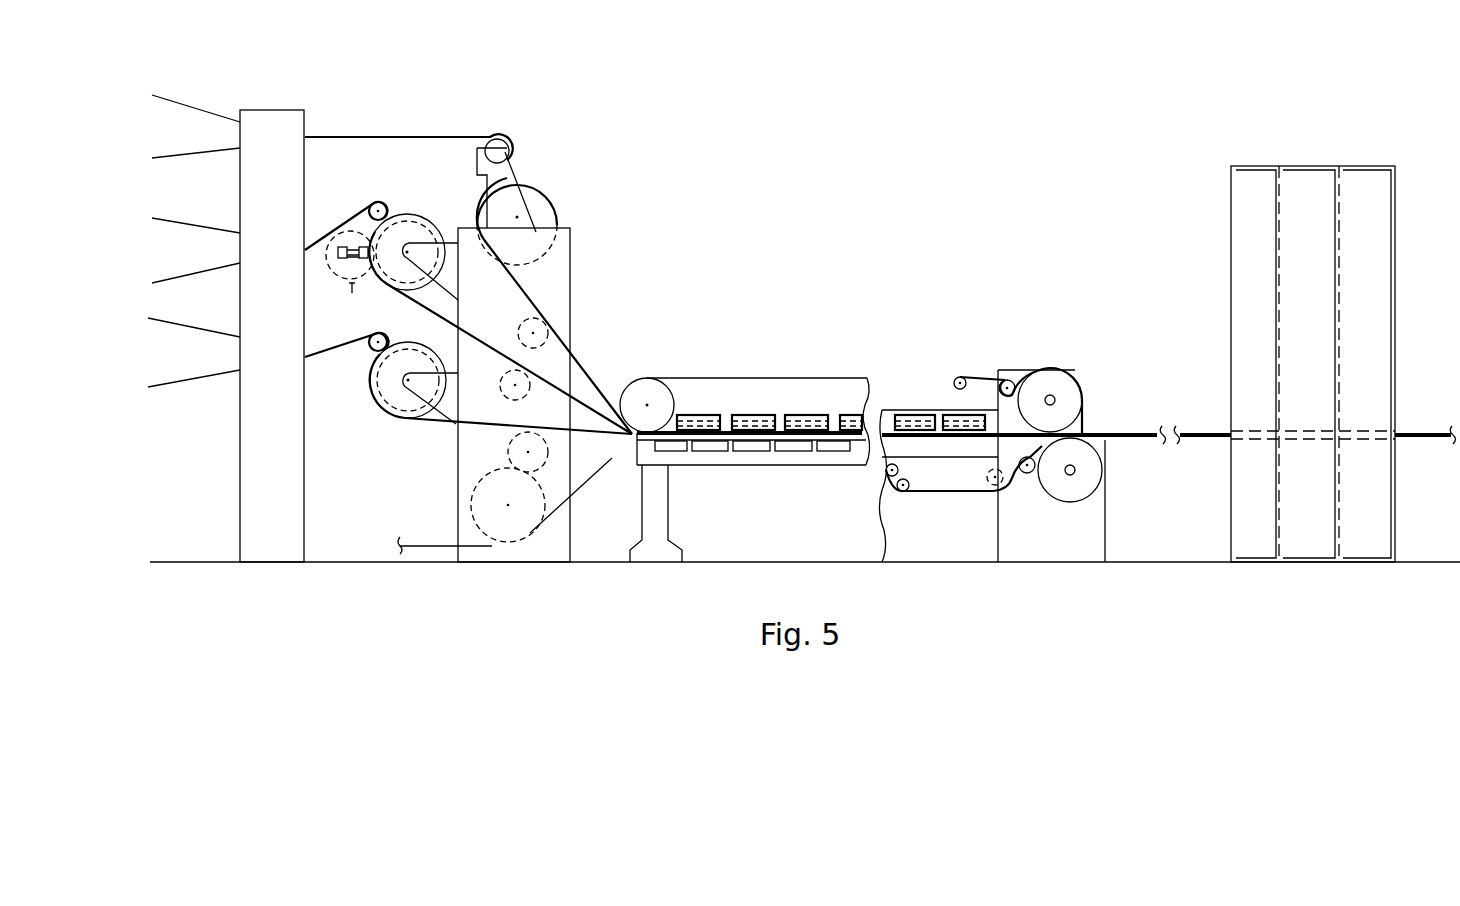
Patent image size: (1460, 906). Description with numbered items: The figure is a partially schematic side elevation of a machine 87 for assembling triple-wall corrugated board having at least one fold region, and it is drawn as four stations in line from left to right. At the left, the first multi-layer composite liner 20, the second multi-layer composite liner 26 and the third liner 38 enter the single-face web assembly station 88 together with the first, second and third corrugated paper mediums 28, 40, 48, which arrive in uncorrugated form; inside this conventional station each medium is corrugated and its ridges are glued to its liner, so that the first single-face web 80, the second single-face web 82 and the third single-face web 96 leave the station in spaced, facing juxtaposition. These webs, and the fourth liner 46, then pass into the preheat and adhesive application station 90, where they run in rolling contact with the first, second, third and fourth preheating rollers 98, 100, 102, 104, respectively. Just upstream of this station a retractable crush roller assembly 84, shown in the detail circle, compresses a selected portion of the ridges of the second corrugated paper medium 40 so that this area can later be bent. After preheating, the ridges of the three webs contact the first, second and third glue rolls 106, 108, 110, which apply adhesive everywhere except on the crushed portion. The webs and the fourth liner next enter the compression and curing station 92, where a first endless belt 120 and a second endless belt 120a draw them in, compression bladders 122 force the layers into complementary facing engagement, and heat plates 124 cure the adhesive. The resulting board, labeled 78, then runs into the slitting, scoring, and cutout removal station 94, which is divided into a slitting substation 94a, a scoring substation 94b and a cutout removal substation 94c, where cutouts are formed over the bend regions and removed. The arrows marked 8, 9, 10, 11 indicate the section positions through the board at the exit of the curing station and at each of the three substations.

The section line 8- 8 is at (1130, 483).
The section line 9- 9 is at (1238, 482).
The section line 10- 10 is at (1294, 482).
The section line 11- 11 is at (1356, 482).
The first multi-layer composite liner 20 is at (168, 98).
The second multi-layer composite liner 26 is at (162, 217).
The first corrugated paper medium 28 is at (168, 158).
The third liner 38 is at (168, 320).
The second corrugated paper medium 40 is at (168, 283).
The fourth liner 46 is at (432, 545).
The third corrugated paper medium 48 is at (168, 387).
The laminated product web 78 is at (1108, 435).
The first single-face web 80 is at (462, 137).
The second single-face web 82 is at (332, 222).
The retractable crush roller assembly 84 is at (340, 260).
The machine 87 is at (778, 186).
The single-face web assembly station 88 is at (270, 92).
The preheat and adhesive application station 90 is at (590, 240).
The compression and curing station 92 is at (945, 318).
The slitting, scoring, and cutout removal station 94 is at (1298, 145).
The slitting substation 94a is at (1250, 243).
The scoring substation 94b is at (1317, 180).
The cutout removal substation 94c is at (1373, 230).
The third single-face web 96 is at (333, 352).
The first preheating roller 98 is at (556, 190).
The second preheating roller 100 is at (421, 215).
The third preheating roller 102 is at (393, 400).
The fourth preheating roller 104 is at (503, 518).
The first glue roll 106 is at (530, 322).
The second glue roll 108 is at (503, 388).
The third glue roll 110 is at (513, 445).
The first endless belt 120 is at (693, 377).
The second endless belt 120a is at (945, 493).
The compression bladders 122 is at (945, 412).
The heat plates 124 is at (670, 452).